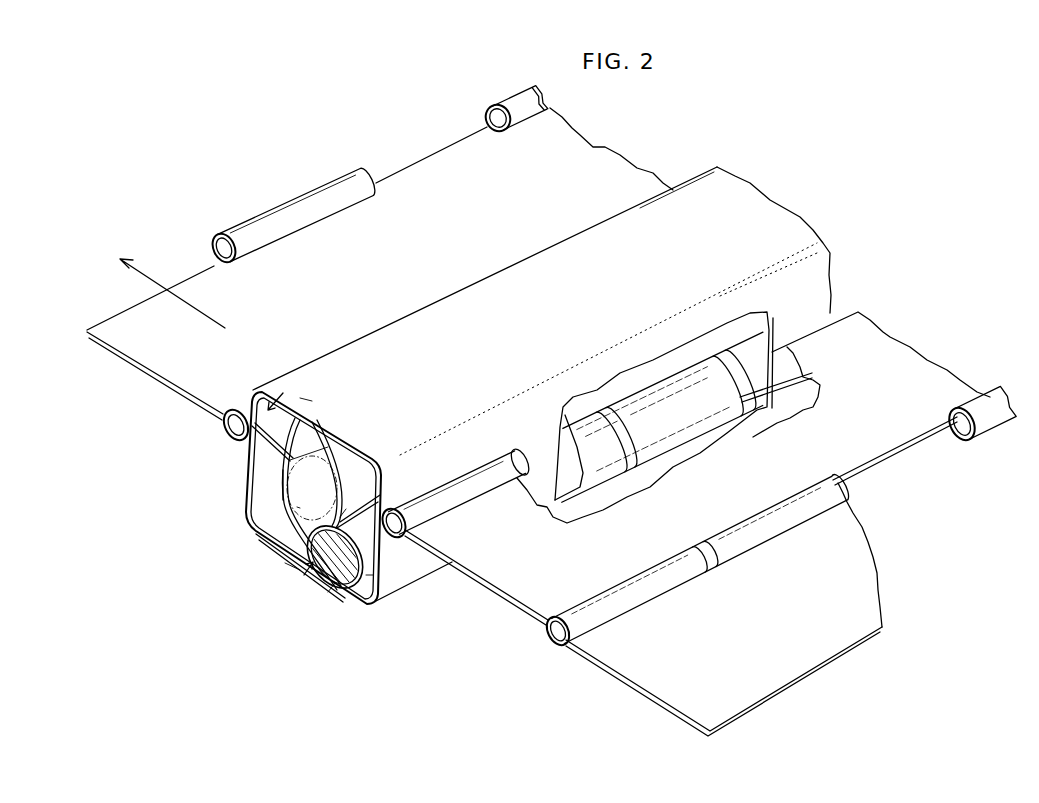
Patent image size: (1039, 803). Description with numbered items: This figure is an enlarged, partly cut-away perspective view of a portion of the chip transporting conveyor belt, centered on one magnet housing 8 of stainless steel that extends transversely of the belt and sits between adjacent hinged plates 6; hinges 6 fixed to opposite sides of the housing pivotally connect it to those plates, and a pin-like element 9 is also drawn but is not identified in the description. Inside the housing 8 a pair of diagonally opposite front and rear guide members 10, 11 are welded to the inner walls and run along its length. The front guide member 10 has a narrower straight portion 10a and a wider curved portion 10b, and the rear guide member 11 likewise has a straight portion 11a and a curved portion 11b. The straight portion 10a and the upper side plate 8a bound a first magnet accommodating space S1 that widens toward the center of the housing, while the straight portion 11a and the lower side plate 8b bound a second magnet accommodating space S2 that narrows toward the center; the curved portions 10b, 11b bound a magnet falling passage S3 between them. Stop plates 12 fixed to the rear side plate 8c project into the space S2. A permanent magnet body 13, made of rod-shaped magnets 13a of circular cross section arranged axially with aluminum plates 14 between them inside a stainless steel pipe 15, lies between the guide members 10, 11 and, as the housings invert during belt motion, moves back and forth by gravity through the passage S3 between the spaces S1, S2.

The hinged plate 6 is at (436, 167).
The magnet housing 8 is at (492, 278).
The upper side plate 8a is at (302, 424).
The lower side plate 8b is at (355, 600).
The rear side plate 8c is at (377, 503).
The hinge pin 9 is at (478, 465).
The front guide member 10 is at (312, 534).
The straight portion of front guide member 10a is at (271, 449).
The curved portion of front guide member 10b is at (283, 500).
The rear guide member 11 is at (335, 468).
The straight portion of rear guide member 11a is at (381, 534).
The curved portion of rear guide member 11b is at (342, 466).
The stop plate 12 is at (367, 573).
The permanent magnet body 13 is at (305, 397).
The rod-shaped magnet 13a is at (617, 477).
The aluminum plate 14 is at (632, 462).
The pipe 15 is at (285, 563).
The first magnet accommodating space S1 is at (288, 393).
The second magnet accommodating space S2 is at (296, 579).
The magnet falling passage S3 is at (285, 517).